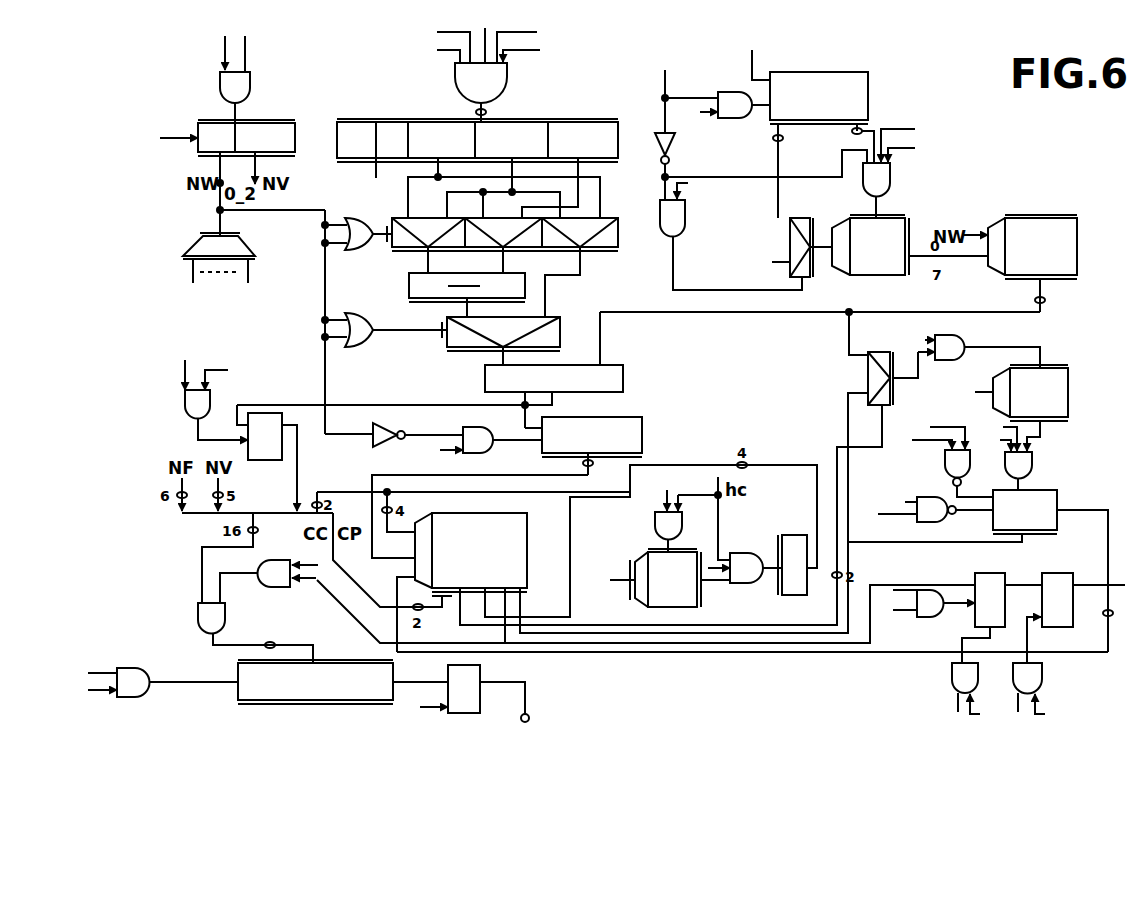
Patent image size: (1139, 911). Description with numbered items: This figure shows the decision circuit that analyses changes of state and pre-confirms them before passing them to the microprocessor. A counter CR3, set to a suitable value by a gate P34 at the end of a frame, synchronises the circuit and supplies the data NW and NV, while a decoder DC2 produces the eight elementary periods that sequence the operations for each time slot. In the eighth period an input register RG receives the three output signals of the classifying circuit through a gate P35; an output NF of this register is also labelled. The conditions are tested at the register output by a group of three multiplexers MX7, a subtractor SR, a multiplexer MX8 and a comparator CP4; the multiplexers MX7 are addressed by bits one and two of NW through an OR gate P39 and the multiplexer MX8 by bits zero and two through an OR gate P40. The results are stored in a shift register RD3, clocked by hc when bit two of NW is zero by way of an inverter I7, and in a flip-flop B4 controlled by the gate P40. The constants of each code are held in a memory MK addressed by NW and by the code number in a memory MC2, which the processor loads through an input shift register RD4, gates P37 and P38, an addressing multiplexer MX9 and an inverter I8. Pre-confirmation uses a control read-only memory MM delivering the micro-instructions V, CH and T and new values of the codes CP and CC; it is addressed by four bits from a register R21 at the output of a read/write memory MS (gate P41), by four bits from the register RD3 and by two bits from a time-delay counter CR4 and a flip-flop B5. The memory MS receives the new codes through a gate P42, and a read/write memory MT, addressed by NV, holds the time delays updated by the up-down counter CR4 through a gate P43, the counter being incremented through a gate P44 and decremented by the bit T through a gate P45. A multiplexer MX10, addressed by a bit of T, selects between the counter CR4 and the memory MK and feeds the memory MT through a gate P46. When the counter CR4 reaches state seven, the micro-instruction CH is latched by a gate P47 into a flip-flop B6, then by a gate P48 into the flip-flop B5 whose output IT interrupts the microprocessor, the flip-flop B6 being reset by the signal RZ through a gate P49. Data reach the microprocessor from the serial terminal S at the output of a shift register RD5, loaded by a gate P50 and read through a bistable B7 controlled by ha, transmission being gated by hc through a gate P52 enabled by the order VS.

The gate P34 is at (228, 90).
The counter CR3 is at (278, 130).
The decoder DC2 is at (212, 246).
The gate P35 is at (470, 90).
The input register RG is at (600, 122).
The register output field NF is at (359, 176).
The OR gate P39 is at (348, 248).
The subtractor SR is at (409, 285).
The group of three multiplexers MX7 is at (605, 240).
The multiplexer MX8 is at (553, 317).
The OR gate P40 is at (355, 340).
The comparator CP4 is at (620, 385).
The shift register RD3 is at (640, 433).
The inverter I7 is at (395, 428).
The flip-flop B4 is at (289, 458).
The gate P38 is at (730, 95).
The input shift register RD4 is at (828, 72).
The inverter I8 is at (672, 140).
The gate P37 is at (680, 220).
The addressing multiplexer MX9 is at (804, 270).
The memory MC2 is at (900, 228).
The memory MK is at (1030, 218).
The multiplexer MX10 is at (868, 372).
The gate P46 is at (970, 342).
The read/write memory MT is at (1062, 370).
The gate P44 is at (950, 470).
The gate P43 is at (1035, 467).
The gate P45 is at (921, 516).
The up-down counter CR4 is at (1045, 512).
The flip-flop B6 is at (985, 573).
The flip-flop B5 is at (1050, 573).
The gate P47 is at (930, 620).
The gate P48 is at (1040, 684).
The gate P49 is at (955, 680).
The register R21 is at (805, 524).
The gate P41 is at (755, 585).
The gate P42 is at (660, 532).
The read/write memory MS is at (662, 608).
The control read-only memory MM is at (515, 537).
The bistable B7 is at (478, 681).
The shift register RD5 is at (340, 692).
The gate P50 is at (205, 615).
The gate P52 is at (155, 652).